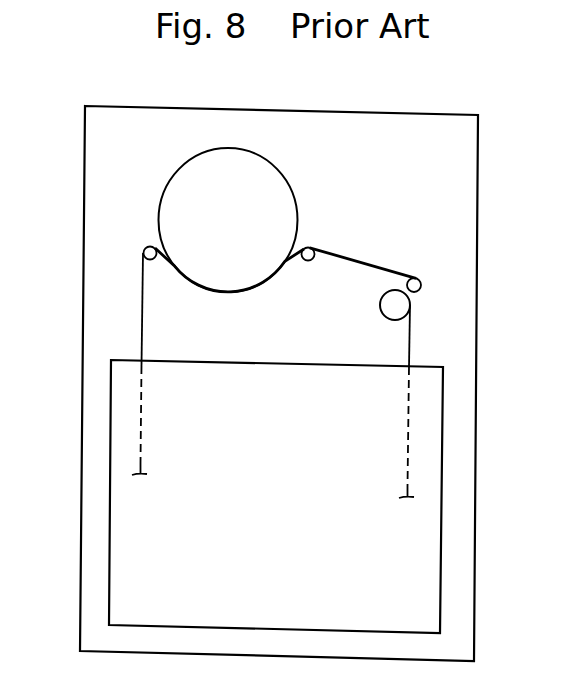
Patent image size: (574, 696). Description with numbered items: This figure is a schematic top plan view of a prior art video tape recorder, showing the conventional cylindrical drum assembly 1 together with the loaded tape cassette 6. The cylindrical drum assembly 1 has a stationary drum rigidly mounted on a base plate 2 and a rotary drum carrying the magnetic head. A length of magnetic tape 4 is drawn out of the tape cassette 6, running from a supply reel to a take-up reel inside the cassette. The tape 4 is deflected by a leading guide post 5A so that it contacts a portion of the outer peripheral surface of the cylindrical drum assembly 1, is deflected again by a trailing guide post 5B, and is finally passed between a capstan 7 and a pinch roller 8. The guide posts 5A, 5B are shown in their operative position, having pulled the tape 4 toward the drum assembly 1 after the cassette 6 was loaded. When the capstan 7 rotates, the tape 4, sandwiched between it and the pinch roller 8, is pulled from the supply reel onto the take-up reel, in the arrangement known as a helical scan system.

The cylindrical drum assembly 1 is at (288, 174).
The base plate 2 is at (475, 590).
The magnetic tape 4 is at (140, 300).
The leading guide post 5A is at (144, 251).
The trailing guide post 5B is at (315, 248).
The tape cassette 6 is at (441, 505).
The capstan 7 is at (421, 281).
The pinch roller 8 is at (405, 307).